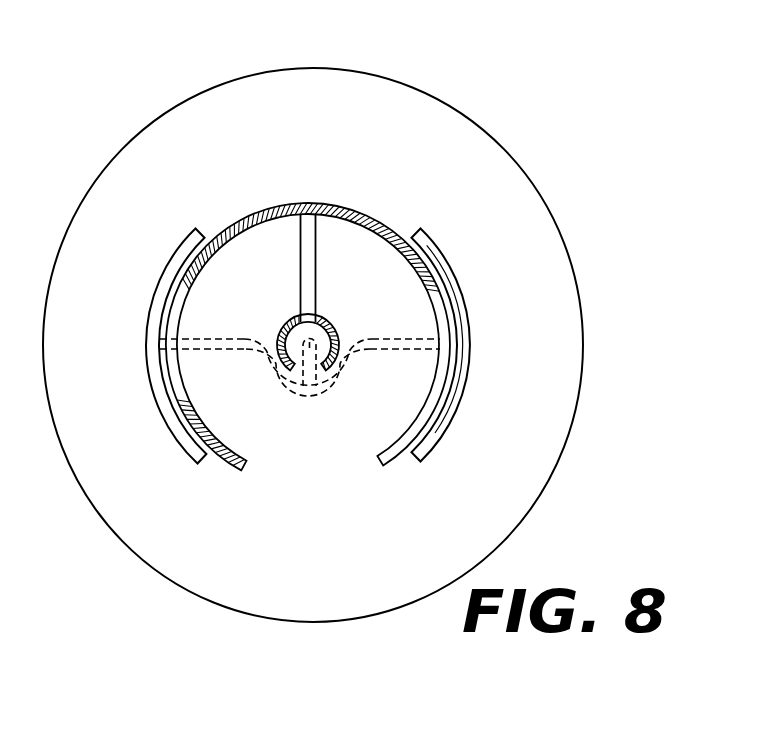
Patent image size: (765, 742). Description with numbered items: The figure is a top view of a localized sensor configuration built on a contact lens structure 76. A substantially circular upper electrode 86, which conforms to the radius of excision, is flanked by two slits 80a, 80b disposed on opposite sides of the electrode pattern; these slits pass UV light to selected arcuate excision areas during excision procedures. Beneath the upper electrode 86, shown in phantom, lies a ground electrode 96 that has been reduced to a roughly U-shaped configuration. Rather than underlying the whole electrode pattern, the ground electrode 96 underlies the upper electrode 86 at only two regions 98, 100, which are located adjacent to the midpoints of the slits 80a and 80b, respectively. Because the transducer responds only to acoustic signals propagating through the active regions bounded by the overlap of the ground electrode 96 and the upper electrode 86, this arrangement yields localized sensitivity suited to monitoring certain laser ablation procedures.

The contact lens structure 76 is at (395, 108).
The upper electrode 86 is at (388, 214).
The slit 80a is at (163, 284).
The slit 80b is at (450, 266).
The region 98 is at (183, 337).
The region 100 is at (440, 337).
The ground electrode 96 is at (333, 396).